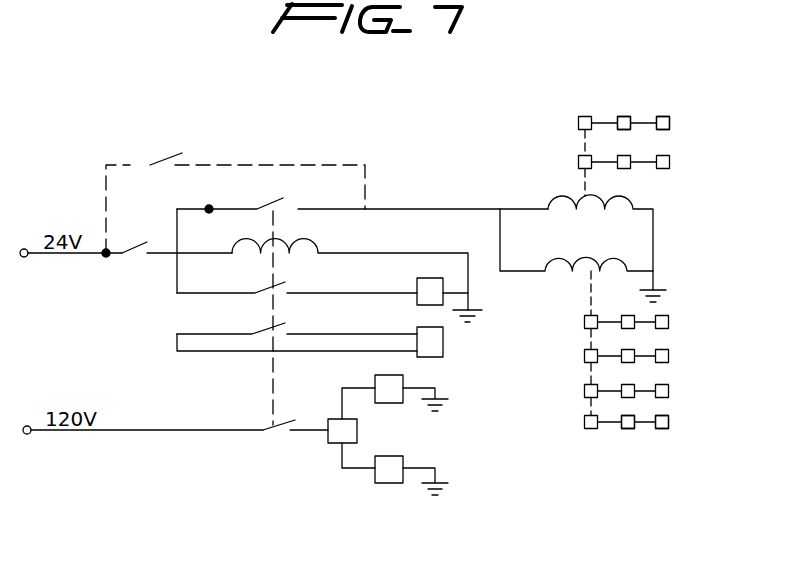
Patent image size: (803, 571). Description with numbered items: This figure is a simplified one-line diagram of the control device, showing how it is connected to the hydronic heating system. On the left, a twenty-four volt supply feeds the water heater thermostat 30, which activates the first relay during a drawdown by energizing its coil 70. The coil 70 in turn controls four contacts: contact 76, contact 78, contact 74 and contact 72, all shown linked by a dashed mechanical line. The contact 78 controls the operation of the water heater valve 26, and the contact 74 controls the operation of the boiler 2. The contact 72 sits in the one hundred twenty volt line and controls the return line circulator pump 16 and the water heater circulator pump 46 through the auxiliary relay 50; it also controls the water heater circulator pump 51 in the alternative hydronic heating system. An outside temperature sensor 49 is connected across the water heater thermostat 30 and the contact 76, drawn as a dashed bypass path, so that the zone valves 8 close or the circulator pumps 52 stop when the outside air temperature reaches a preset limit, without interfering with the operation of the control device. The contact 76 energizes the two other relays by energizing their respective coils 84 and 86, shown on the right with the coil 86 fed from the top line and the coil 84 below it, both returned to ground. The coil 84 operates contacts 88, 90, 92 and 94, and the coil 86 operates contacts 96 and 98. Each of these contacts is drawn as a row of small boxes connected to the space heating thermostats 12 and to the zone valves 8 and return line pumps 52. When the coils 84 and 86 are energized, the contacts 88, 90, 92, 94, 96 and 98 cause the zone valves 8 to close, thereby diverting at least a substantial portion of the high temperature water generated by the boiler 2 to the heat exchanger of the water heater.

The boiler 2 is at (443, 349).
The space heating zone valves 8 is at (697, 266).
The space heating thermostats 12 is at (627, 115).
The return line circulator pump 16 is at (392, 485).
The water heater valve 26 is at (445, 283).
The water heater thermostat 30 is at (136, 250).
The water heater circulator pump 46 is at (429, 410).
The outside temperature sensor 49 is at (170, 157).
The auxiliary relay 50 is at (332, 440).
The water heater circulator pump 51 is at (395, 405).
The return line pumps 52 is at (667, 115).
The coil 70 is at (313, 241).
The contact 72 is at (315, 416).
The contact 74 is at (288, 329).
The contact 76 is at (293, 203).
The contact 78 is at (283, 289).
The coil 84 is at (627, 262).
The coil 86 is at (633, 203).
The contact 88 is at (584, 322).
The contact 90 is at (584, 356).
The contact 92 is at (584, 391).
The contact 94 is at (584, 422).
The contact 96 is at (578, 162).
The contact 98 is at (578, 123).